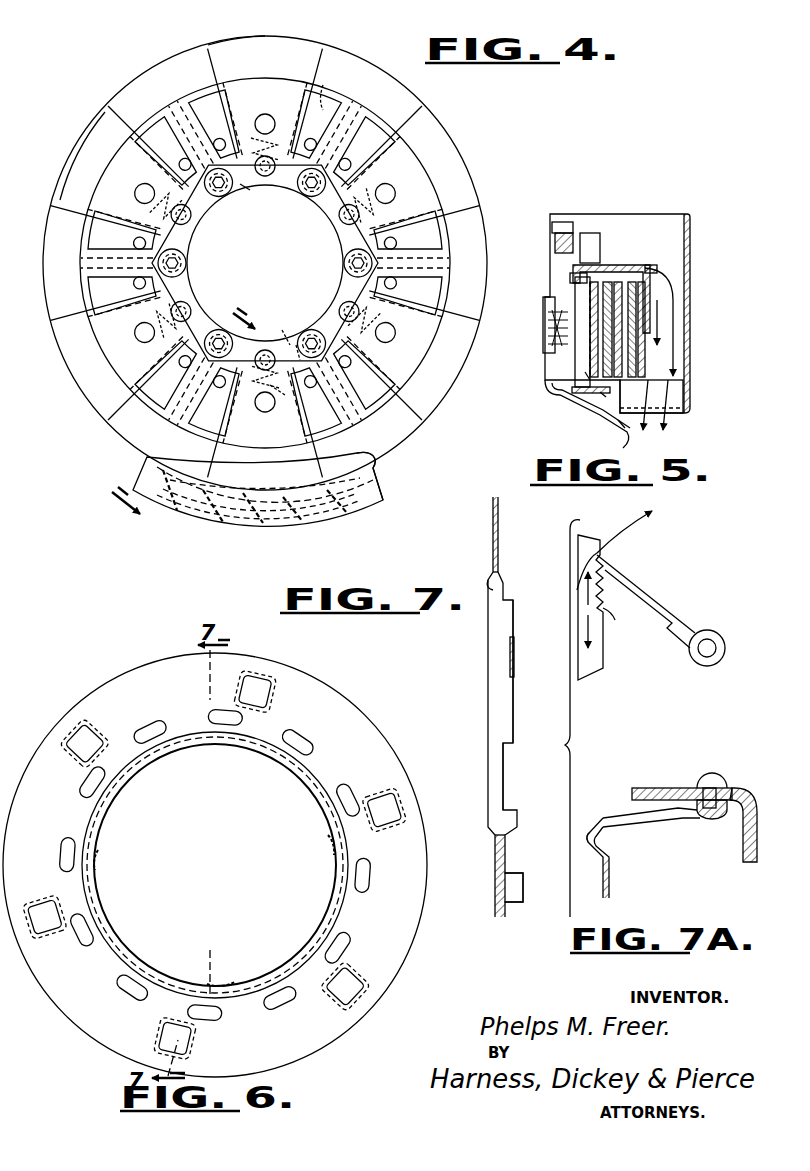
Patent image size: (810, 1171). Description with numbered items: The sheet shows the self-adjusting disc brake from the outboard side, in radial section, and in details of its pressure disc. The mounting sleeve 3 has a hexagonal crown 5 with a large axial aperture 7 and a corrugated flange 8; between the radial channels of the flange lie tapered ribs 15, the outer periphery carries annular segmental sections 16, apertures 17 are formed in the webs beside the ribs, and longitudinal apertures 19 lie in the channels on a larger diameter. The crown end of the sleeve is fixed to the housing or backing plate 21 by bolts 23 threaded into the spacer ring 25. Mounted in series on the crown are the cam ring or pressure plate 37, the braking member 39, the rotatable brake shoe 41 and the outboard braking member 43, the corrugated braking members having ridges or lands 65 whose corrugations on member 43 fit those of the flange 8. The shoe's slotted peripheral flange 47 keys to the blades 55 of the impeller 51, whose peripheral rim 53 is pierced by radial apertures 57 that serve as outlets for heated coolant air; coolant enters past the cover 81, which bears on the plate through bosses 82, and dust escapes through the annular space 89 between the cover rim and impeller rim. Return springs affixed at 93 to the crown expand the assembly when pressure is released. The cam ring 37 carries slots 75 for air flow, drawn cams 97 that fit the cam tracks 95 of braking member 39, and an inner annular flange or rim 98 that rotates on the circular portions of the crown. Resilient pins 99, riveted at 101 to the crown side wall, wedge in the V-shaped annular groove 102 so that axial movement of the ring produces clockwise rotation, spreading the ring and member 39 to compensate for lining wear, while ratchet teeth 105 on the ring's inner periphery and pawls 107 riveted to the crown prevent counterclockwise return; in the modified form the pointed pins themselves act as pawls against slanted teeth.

In FIG. 4, the mounting sleeve 3 is at (205, 215).
In FIG. 4, the crown 5 is at (236, 246).
In FIG. 5, the crown 5 is at (650, 262).
In FIG. 7A, the crown 5 is at (650, 788).
In FIG. 4, the axial aperture 7 is at (320, 205).
In FIG. 4, the flange 8 is at (323, 85).
In FIG. 5, the flange 8 is at (676, 300).
In FIG. 7A, the flange 8 is at (745, 857).
In FIG. 4, the radial ribs 15 is at (355, 120).
In FIG. 4, the annular segmental sections 16 is at (362, 122).
In FIG. 4, the apertures 17 is at (315, 140).
In FIG. 5, the apertures 17 is at (651, 265).
In FIG. 4, the longitudinal apertures 19 is at (265, 112).
In FIG. 5, the housing or backing plate 21 is at (583, 363).
In FIG. 4, the bolts 23 is at (238, 190).
In FIG. 5, the bolts 23 is at (600, 240).
In FIG. 4, the spacer ring 25 is at (187, 268).
In FIG. 5, the cam ring or pressure plate 37 is at (607, 265).
In FIG. 6, the cam ring or pressure plate 37 is at (325, 688).
In FIG. 7, the cam ring or pressure plate 37 is at (492, 540).
In FIG. 7A, the cam ring or pressure plate 37 is at (606, 652).
In FIG. 5, the braking member 39 is at (590, 384).
In FIG. 5, the brake shoe 41 is at (605, 396).
In FIG. 4, the braking member 43 is at (208, 45).
In FIG. 5, the braking member 43 is at (657, 342).
In FIG. 4, the slotted peripheral rim or flange 47 is at (300, 520).
In FIG. 4, the impeller 51 is at (197, 525).
In FIG. 5, the impeller 51 is at (692, 250).
In FIG. 4, the peripheral rim 53 is at (228, 520).
In FIG. 4, the blades 55 is at (383, 500).
In FIG. 5, the blades 55 is at (682, 390).
In FIG. 4, the radial apertures 57 is at (258, 522).
In FIG. 4, the ridges or lands 65 is at (105, 112).
In FIG. 6, the slots 75 is at (163, 727).
In FIG. 7, the slots 75 is at (490, 573).
In FIG. 5, the cover 81 is at (580, 380).
In FIG. 5, the bosses 82 is at (545, 350).
In FIG. 5, the annular space 89 is at (620, 425).
In FIG. 4, the spring attachment points 93 is at (268, 176).
In FIG. 4, the cam tracks 95 is at (193, 303).
In FIG. 6, the cams 97 is at (255, 680).
In FIG. 7, the cams 97 is at (524, 888).
In FIG. 7, the annular flange or rim 98 is at (515, 598).
In FIG. 4, the resilient pins 99 is at (286, 384).
In FIG. 7A, the resilient pins 99 is at (640, 600).
In FIG. 7A, the rivets 101 is at (708, 640).
In FIG. 6, the V-shaped annular groove 102 is at (302, 773).
In FIG. 7, the V-shaped annular groove 102 is at (500, 580).
In FIG. 7A, the V-shaped annular groove 102 is at (622, 855).
In FIG. 4, the ratchet teeth 105 is at (296, 345).
In FIG. 6, the ratchet teeth 105 is at (105, 818).
In FIG. 7, the ratchet teeth 105 is at (515, 655).
In FIG. 7A, the ratchet teeth 105 is at (624, 622).
In FIG. 4, the pawls 107 is at (304, 318).